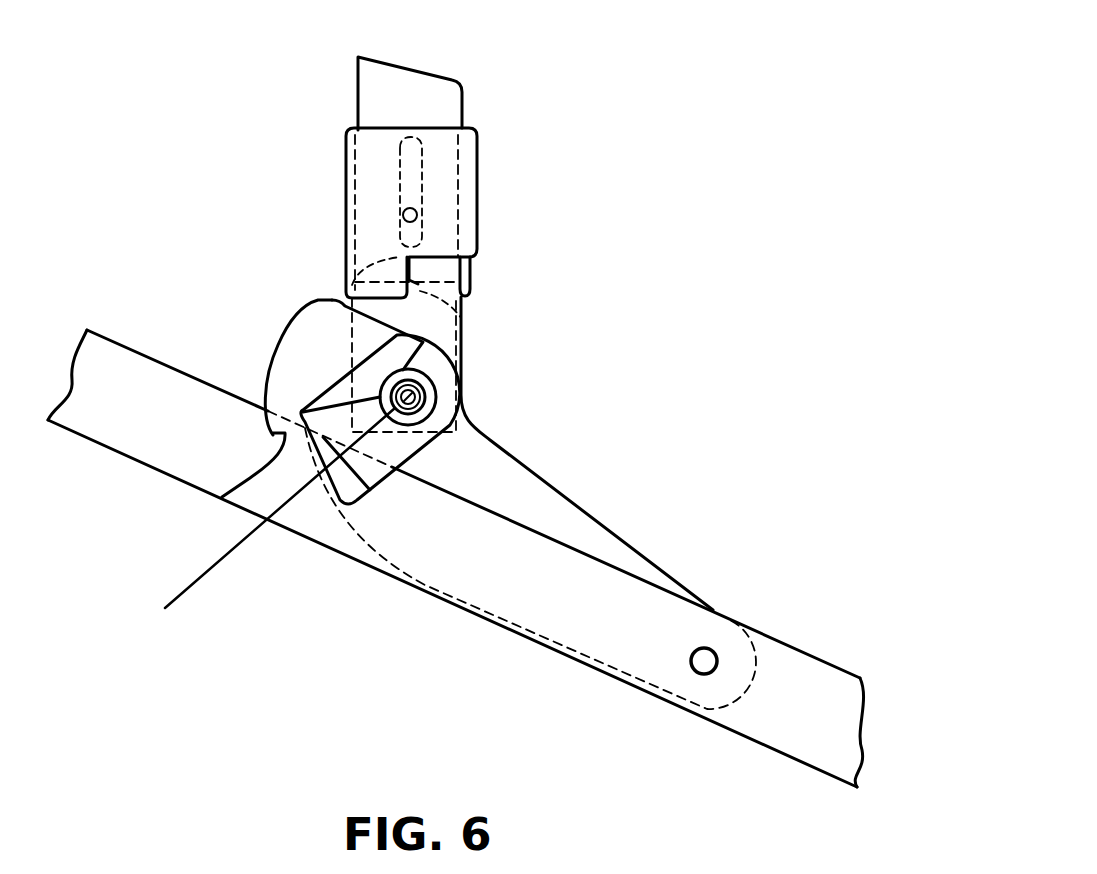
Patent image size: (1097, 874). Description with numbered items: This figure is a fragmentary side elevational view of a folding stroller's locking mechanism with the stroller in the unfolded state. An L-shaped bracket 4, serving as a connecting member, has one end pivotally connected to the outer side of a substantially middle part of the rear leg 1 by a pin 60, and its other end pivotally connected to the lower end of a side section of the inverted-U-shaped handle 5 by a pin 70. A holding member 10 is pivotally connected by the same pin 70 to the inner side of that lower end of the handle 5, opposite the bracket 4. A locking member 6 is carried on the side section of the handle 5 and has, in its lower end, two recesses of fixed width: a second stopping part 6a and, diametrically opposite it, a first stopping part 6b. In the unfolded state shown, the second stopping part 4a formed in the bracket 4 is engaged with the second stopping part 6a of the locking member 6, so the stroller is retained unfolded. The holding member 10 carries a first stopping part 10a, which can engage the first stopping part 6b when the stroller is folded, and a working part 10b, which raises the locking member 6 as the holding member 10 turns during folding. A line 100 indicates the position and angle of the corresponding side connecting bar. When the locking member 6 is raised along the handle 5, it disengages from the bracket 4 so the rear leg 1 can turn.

The rear leg 1 is at (808, 667).
The bracket 4 is at (510, 462).
The second stopping part 4a is at (470, 283).
The handle 5 is at (440, 80).
The locking member 6 is at (470, 182).
The second stopping part 6a is at (352, 282).
The first stopping part 6b is at (402, 272).
The holding member 10 is at (310, 409).
The first stopping part 10a is at (222, 497).
The working part 10b is at (268, 363).
The pin 60 is at (714, 648).
The pin 70 is at (434, 380).
The line 100 is at (226, 558).